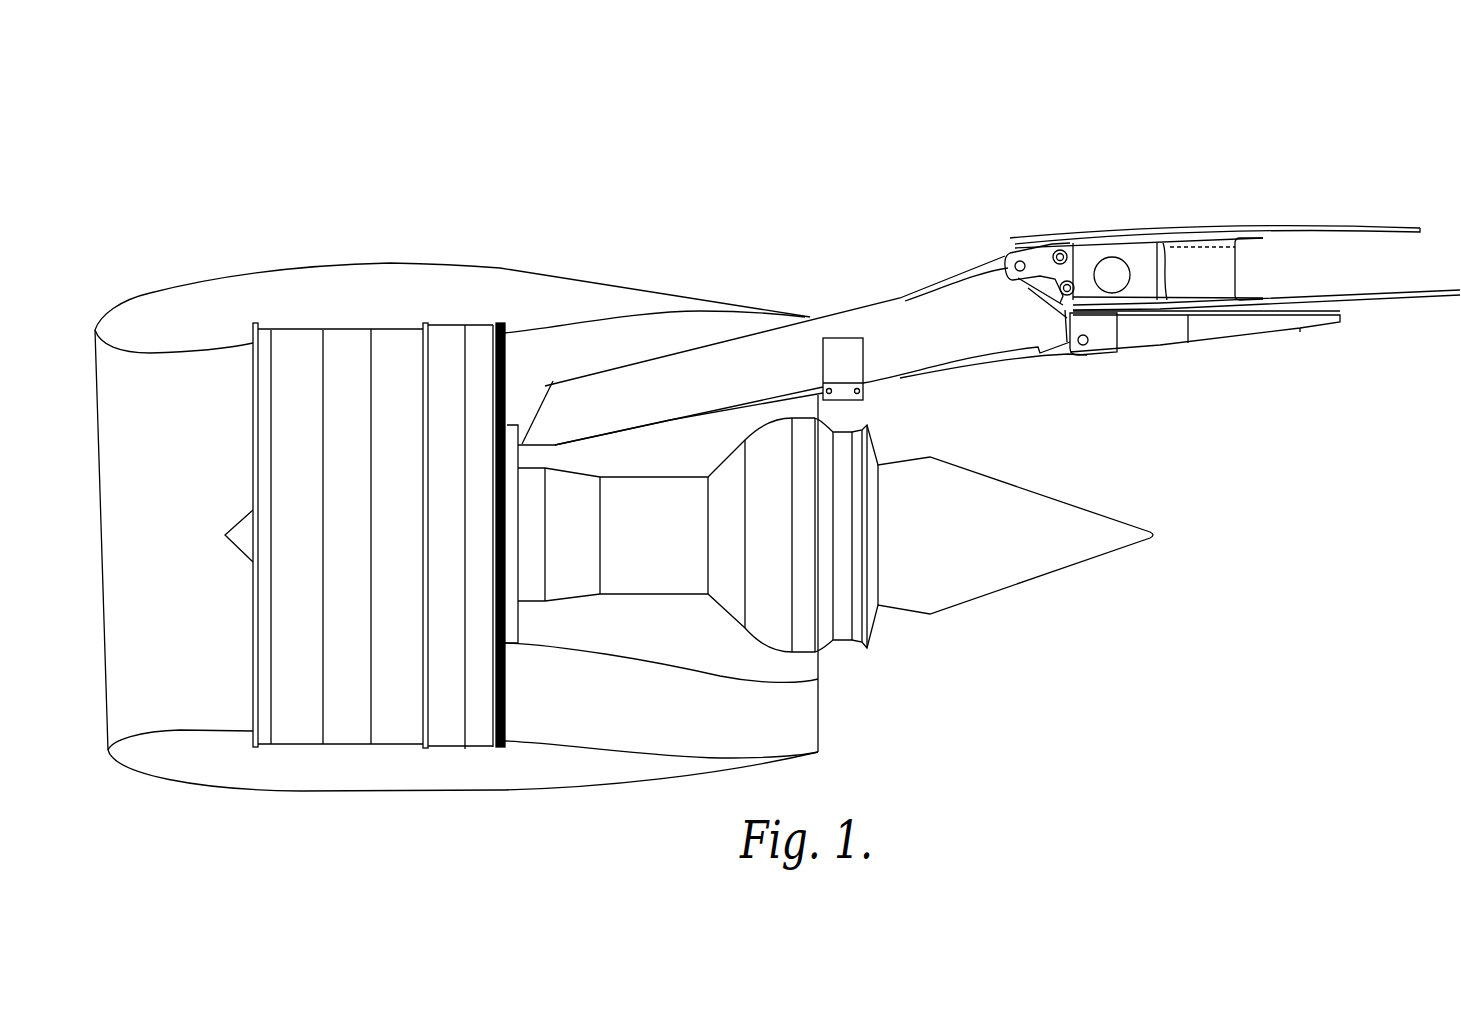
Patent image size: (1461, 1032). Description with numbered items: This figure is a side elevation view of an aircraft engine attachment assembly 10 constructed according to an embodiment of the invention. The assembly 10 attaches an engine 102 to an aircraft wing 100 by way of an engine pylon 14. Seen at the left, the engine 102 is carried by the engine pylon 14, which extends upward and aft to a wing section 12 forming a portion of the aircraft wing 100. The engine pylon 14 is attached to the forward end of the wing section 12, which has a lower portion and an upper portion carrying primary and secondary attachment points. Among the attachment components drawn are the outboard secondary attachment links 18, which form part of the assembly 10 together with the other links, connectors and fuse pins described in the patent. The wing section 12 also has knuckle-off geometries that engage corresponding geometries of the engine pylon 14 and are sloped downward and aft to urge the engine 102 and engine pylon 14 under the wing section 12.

The aircraft engine attachment assembly 10 is at (1020, 180).
The wing section 12 is at (1182, 207).
The engine pylon 14 is at (857, 305).
The outboard secondary attachment links 18 is at (1024, 255).
The aircraft wing 100 is at (1316, 207).
The engine 102 is at (397, 268).